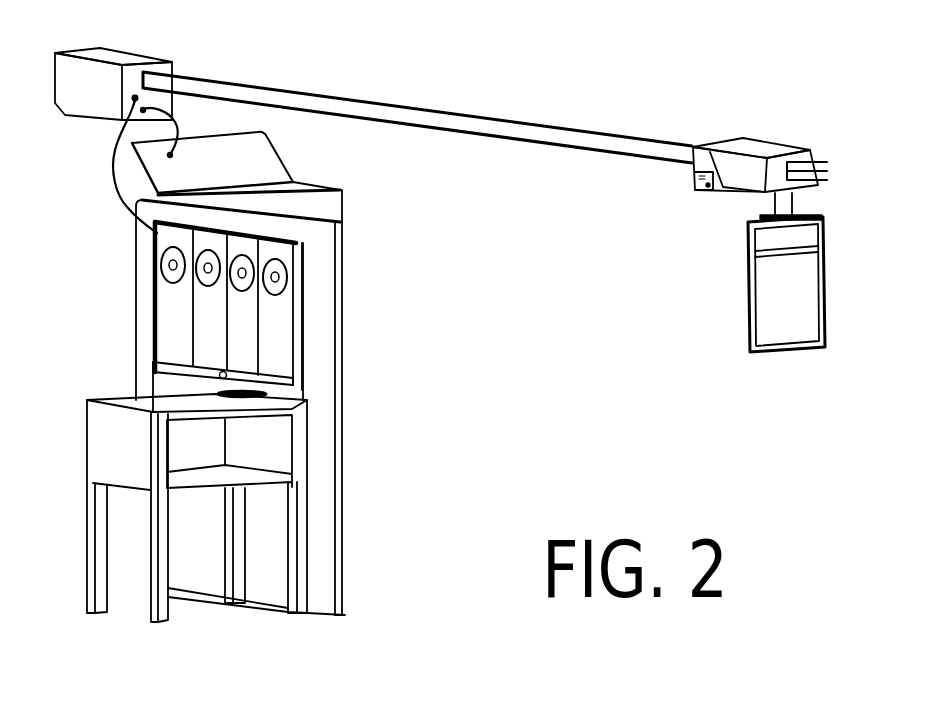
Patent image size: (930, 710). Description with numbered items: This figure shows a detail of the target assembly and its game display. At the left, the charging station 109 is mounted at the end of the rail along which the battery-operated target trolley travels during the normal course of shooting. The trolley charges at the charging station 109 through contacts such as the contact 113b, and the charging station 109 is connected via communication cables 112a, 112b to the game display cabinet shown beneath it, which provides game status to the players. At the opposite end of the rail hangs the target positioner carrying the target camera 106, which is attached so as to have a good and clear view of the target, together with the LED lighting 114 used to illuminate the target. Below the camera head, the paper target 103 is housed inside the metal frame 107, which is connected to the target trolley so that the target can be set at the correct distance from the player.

The charging station 109 is at (151, 54).
The communication cable 112a is at (114, 176).
The communication cable 112b is at (180, 123).
The contact 113b is at (130, 127).
The LED lighting 114 is at (693, 172).
The target camera 106 is at (707, 193).
The paper target 103 is at (772, 305).
The metal frame 107 is at (747, 355).